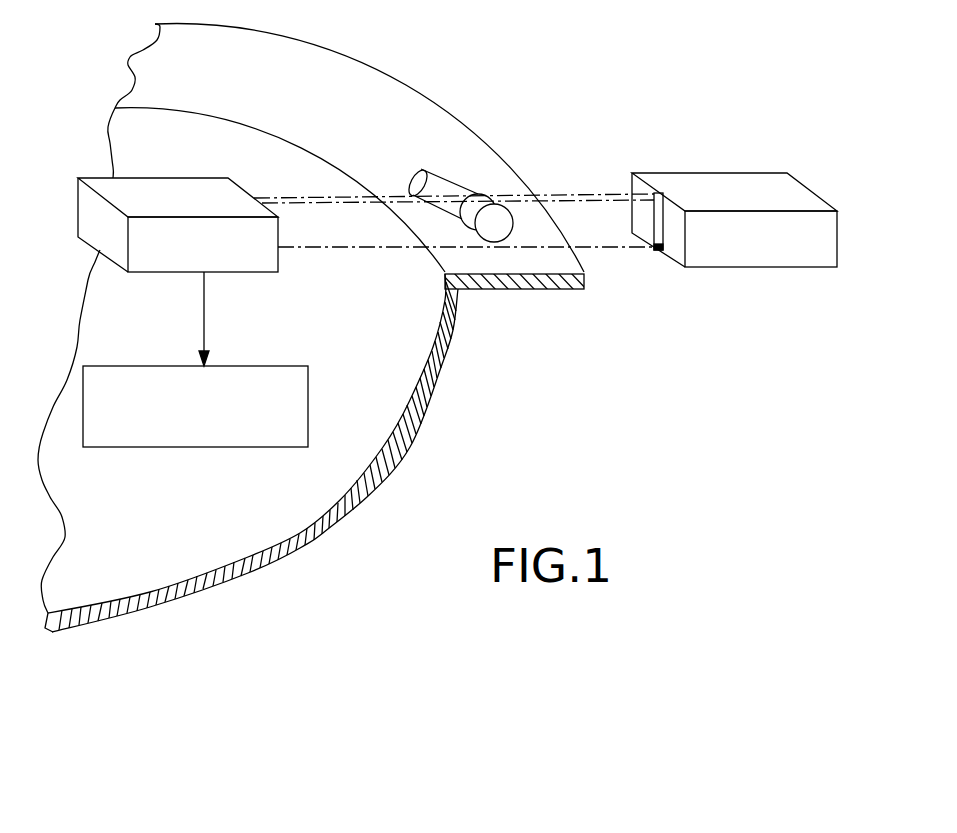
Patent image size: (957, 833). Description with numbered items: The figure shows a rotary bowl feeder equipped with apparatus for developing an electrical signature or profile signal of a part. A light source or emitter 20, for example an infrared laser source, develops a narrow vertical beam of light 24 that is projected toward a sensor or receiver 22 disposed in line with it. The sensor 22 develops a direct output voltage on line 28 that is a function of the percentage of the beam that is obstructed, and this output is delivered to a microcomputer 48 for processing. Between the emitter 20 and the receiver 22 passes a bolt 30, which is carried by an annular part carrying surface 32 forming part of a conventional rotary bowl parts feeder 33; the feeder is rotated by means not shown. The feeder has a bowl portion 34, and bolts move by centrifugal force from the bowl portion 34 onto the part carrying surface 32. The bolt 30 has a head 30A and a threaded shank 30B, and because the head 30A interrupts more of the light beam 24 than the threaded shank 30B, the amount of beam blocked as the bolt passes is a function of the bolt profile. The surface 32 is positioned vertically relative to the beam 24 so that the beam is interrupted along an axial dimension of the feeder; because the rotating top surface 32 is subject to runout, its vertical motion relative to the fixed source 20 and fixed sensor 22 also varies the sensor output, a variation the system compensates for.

The light source or emitter 20 is at (718, 262).
The sensor or receiver 22 is at (115, 190).
The light beam 24 is at (587, 208).
The output voltage line 28 is at (204, 330).
The bolt 30 is at (460, 160).
The head 30A is at (489, 228).
The threaded shank 30B is at (423, 177).
The annular part carrying surface 32 is at (243, 67).
The rotary bowl parts feeder 33 is at (424, 445).
The bowl portion 34 is at (320, 532).
The microcomputer 48 is at (172, 448).